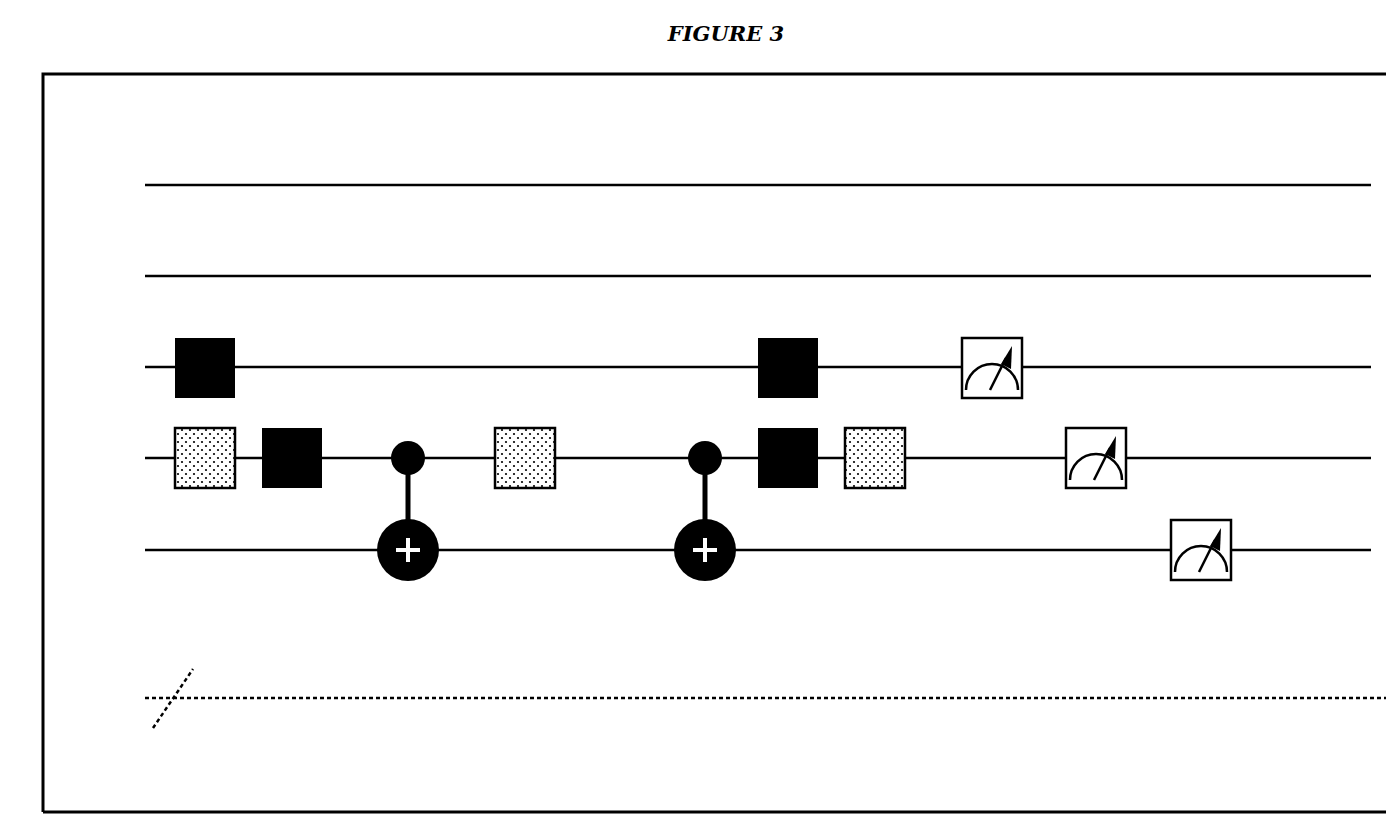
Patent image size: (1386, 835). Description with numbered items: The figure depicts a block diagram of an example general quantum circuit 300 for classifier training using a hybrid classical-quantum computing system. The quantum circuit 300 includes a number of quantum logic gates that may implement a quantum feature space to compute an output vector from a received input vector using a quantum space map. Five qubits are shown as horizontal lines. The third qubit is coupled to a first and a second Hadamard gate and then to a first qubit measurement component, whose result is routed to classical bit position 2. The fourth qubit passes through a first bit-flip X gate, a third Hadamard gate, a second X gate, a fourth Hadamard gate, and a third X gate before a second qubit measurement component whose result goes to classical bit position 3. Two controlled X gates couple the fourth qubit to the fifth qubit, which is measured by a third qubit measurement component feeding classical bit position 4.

The quantum circuit 300 is at (90, 100).
The measurement to classical bit 2 is at (991, 398).
The measurement to classical bit 3 is at (1096, 488).
The measurement to classical bit 4 is at (1201, 580).